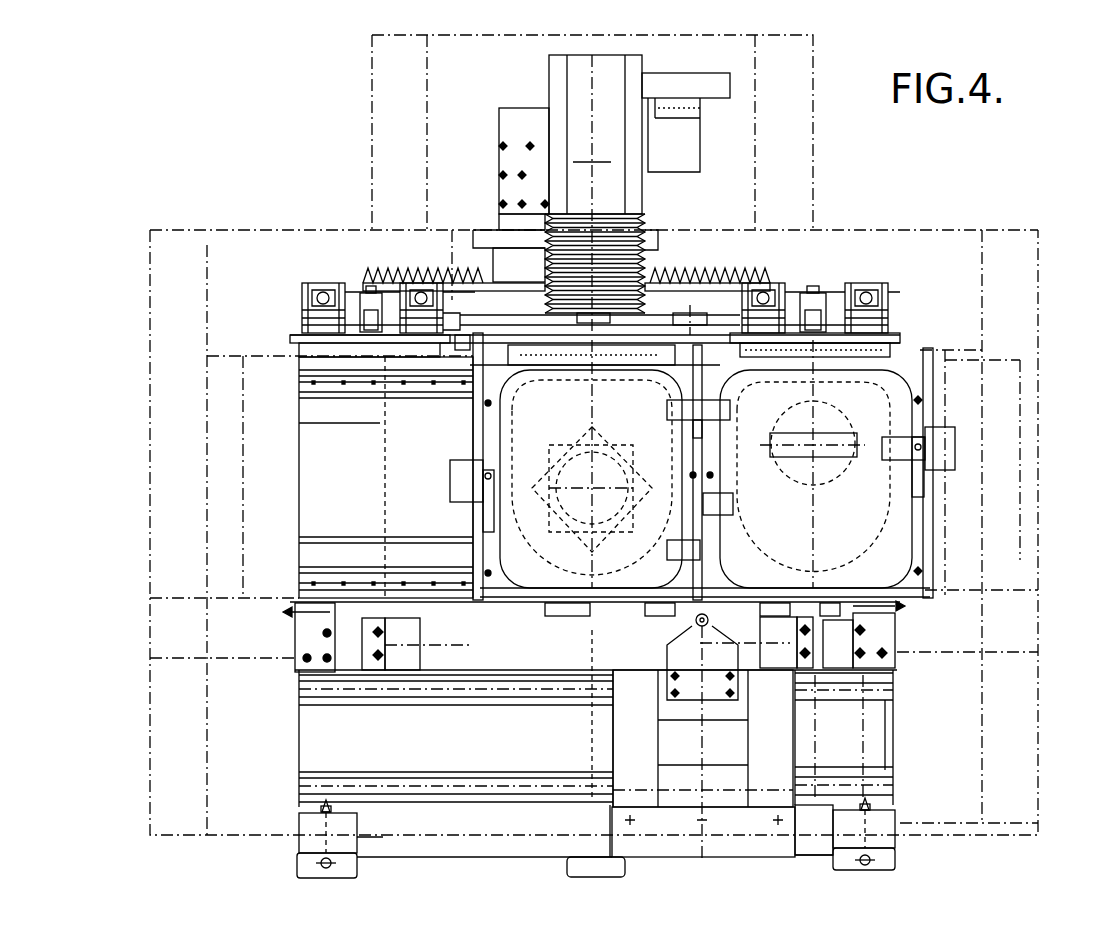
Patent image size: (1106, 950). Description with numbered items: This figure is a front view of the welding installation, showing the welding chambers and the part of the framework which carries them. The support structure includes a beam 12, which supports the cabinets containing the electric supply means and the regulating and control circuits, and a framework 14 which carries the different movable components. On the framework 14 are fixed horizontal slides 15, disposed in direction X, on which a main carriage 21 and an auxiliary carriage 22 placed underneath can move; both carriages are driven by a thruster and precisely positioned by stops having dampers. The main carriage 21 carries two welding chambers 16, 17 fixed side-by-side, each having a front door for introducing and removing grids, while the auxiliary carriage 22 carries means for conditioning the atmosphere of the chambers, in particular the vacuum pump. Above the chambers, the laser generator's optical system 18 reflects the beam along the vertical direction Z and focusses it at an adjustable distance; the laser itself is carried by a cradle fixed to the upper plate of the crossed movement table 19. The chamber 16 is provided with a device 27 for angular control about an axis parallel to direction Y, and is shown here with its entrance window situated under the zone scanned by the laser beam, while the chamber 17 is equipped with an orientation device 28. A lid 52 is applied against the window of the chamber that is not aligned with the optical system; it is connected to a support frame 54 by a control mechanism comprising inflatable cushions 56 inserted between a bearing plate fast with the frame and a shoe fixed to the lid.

The beam 12 is at (307, 825).
The framework 14 is at (318, 446).
The slides 15 is at (303, 376).
The welding chamber 16 is at (564, 466).
The welding chamber 17 is at (897, 469).
The optical system 18 is at (577, 85).
The crossed movement table 19 is at (510, 262).
The main carriage 21 is at (493, 378).
The auxiliary carriage 22 is at (772, 745).
The angular control device 27 is at (607, 468).
The orientation device 28 is at (833, 443).
The lid 52 is at (895, 335).
The support frame 54 is at (837, 260).
The inflatable cushions 56 is at (878, 300).